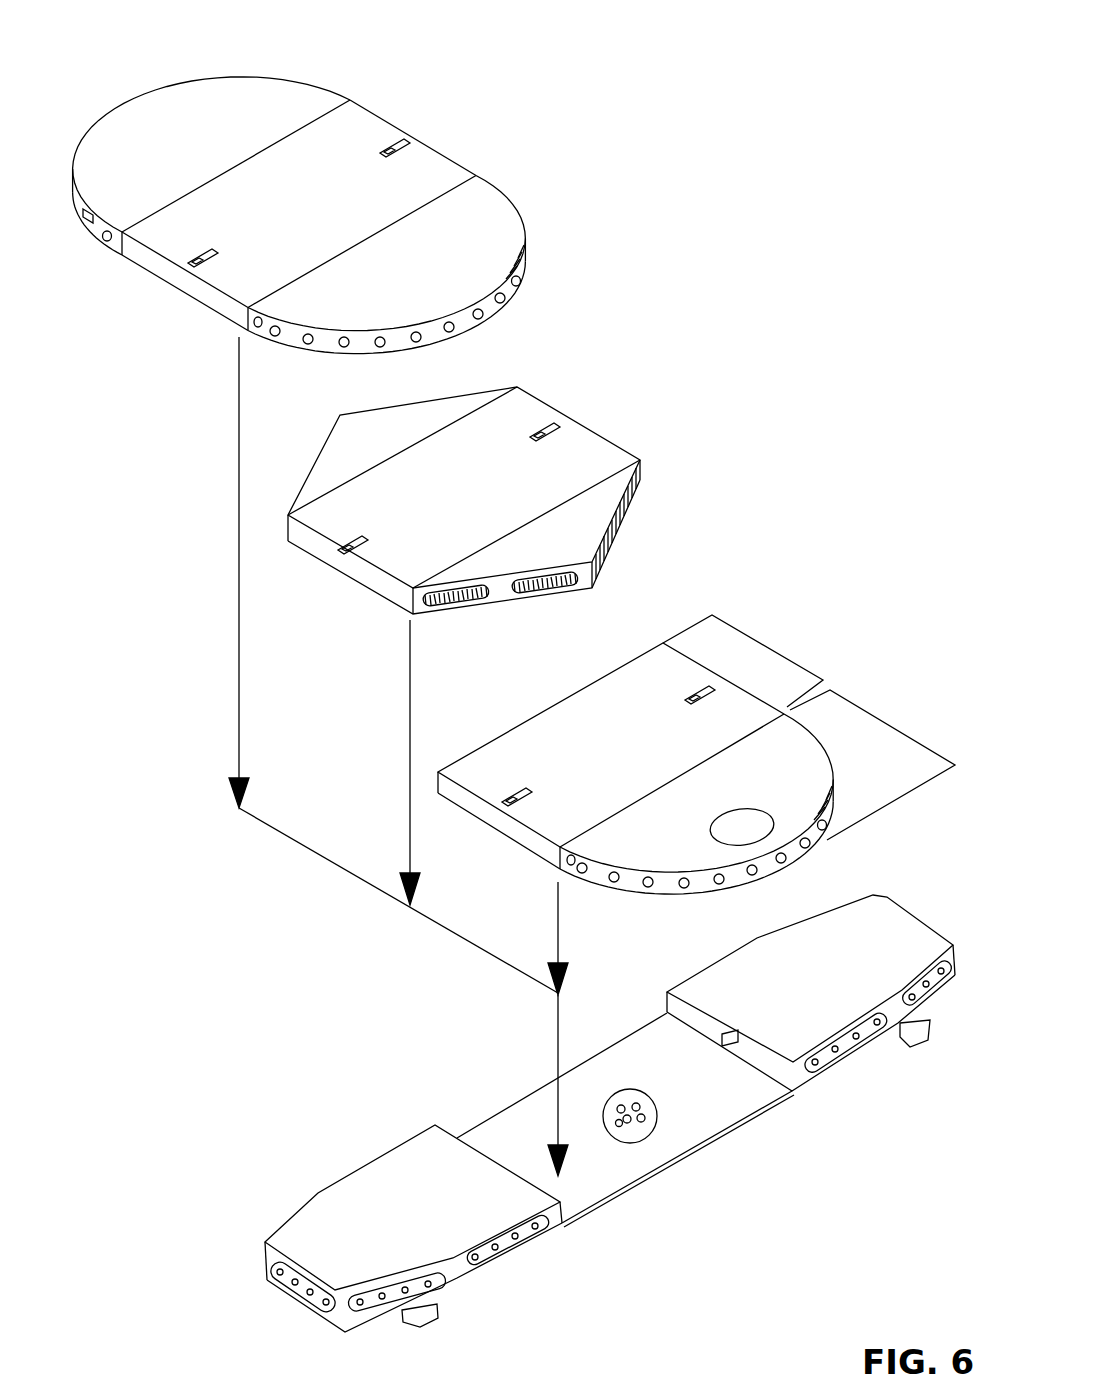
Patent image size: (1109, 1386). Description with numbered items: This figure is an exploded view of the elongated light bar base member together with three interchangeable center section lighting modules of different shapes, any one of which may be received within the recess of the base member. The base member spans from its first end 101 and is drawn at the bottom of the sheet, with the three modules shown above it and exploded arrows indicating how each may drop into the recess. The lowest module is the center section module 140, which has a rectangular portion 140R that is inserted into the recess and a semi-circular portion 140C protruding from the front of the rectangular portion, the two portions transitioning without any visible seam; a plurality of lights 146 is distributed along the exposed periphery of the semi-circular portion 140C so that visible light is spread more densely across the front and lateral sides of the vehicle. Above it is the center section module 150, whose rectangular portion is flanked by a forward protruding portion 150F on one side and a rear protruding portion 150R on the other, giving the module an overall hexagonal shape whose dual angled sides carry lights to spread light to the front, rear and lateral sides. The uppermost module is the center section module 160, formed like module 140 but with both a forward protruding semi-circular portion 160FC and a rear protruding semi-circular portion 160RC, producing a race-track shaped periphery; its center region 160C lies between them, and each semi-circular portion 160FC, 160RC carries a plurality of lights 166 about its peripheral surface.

The first end 101 is at (696, 1194).
The center section module 140 is at (654, 614).
The rectangular portion 140R is at (767, 650).
The semi-circular portion 140C is at (885, 722).
The lights 146 is at (797, 855).
The center section module 150 is at (617, 405).
The rear protruding portion 150R is at (408, 417).
The forward protruding portion 150F is at (582, 522).
The center section module 160 is at (399, 87).
The rear protruding semi-circular portion 160RC is at (277, 97).
The center cover of top light module 160C is at (415, 160).
The forward protruding semi-circular portion 160FC is at (470, 210).
The lights 166 is at (517, 272).